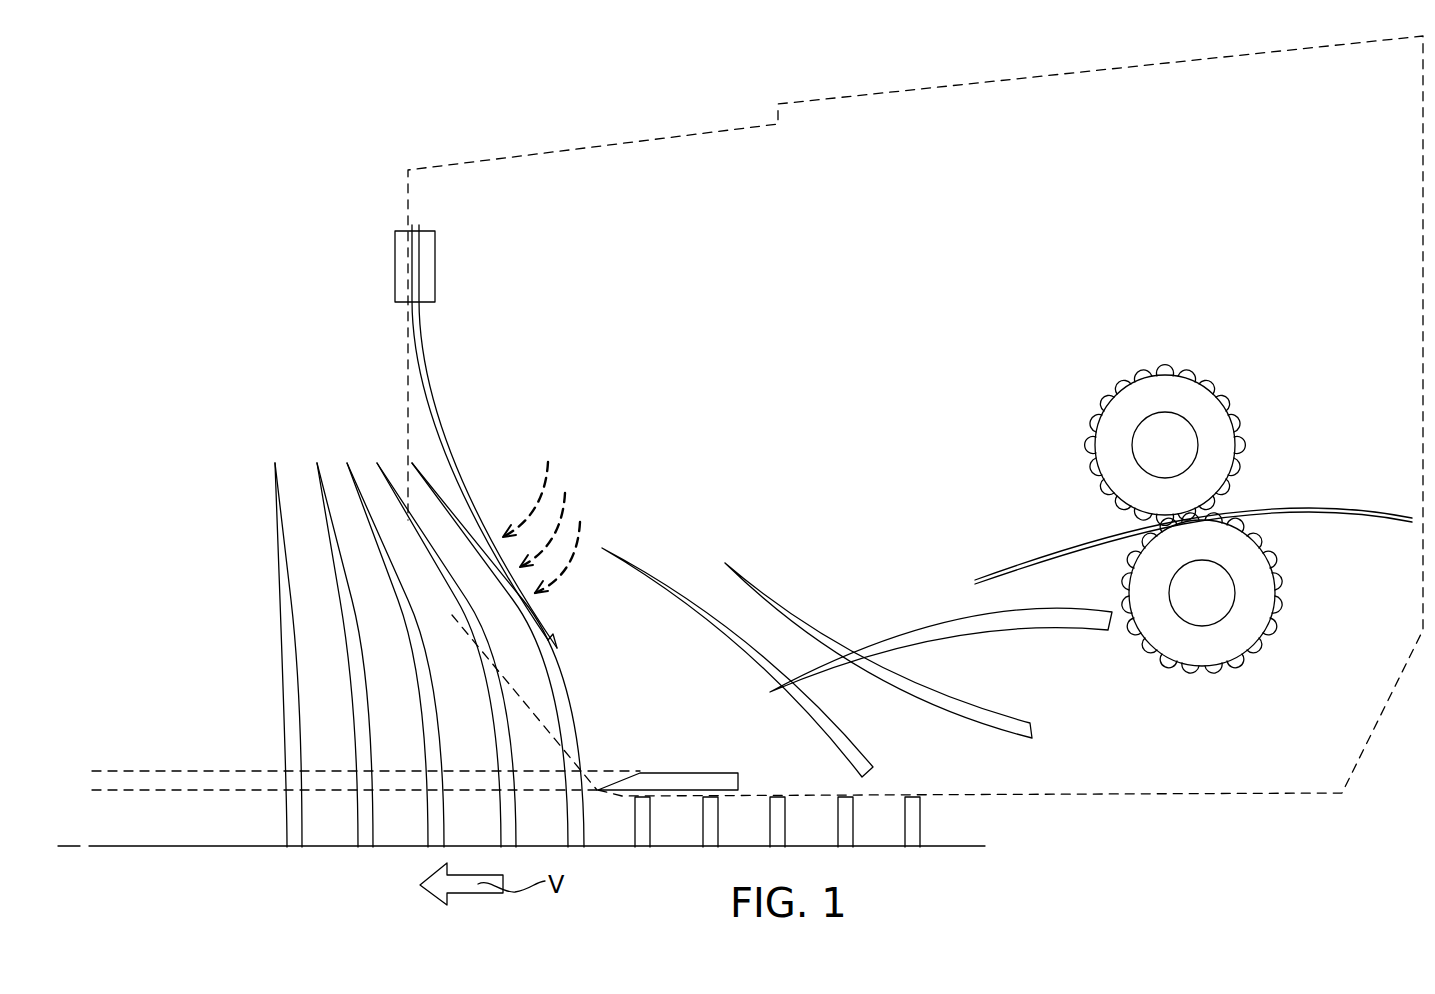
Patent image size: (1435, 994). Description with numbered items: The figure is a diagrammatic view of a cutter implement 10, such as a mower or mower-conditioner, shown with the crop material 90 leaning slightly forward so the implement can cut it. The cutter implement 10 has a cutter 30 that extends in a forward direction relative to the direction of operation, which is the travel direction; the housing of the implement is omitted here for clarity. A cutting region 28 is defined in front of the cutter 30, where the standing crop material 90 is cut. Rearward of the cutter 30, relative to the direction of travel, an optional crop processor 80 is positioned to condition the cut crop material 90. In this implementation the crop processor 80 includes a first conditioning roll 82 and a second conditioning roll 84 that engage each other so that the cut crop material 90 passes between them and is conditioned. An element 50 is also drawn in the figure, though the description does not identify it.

The cutter implement 10 is at (322, 85).
The cutting region 28 is at (110, 770).
The cutter 30 is at (676, 783).
The blade 50 is at (437, 427).
The crop processor 80 is at (1193, 518).
The first conditioning roll 82 is at (1170, 390).
The second conditioning roll 84 is at (1187, 642).
The crop material 90 is at (242, 633).